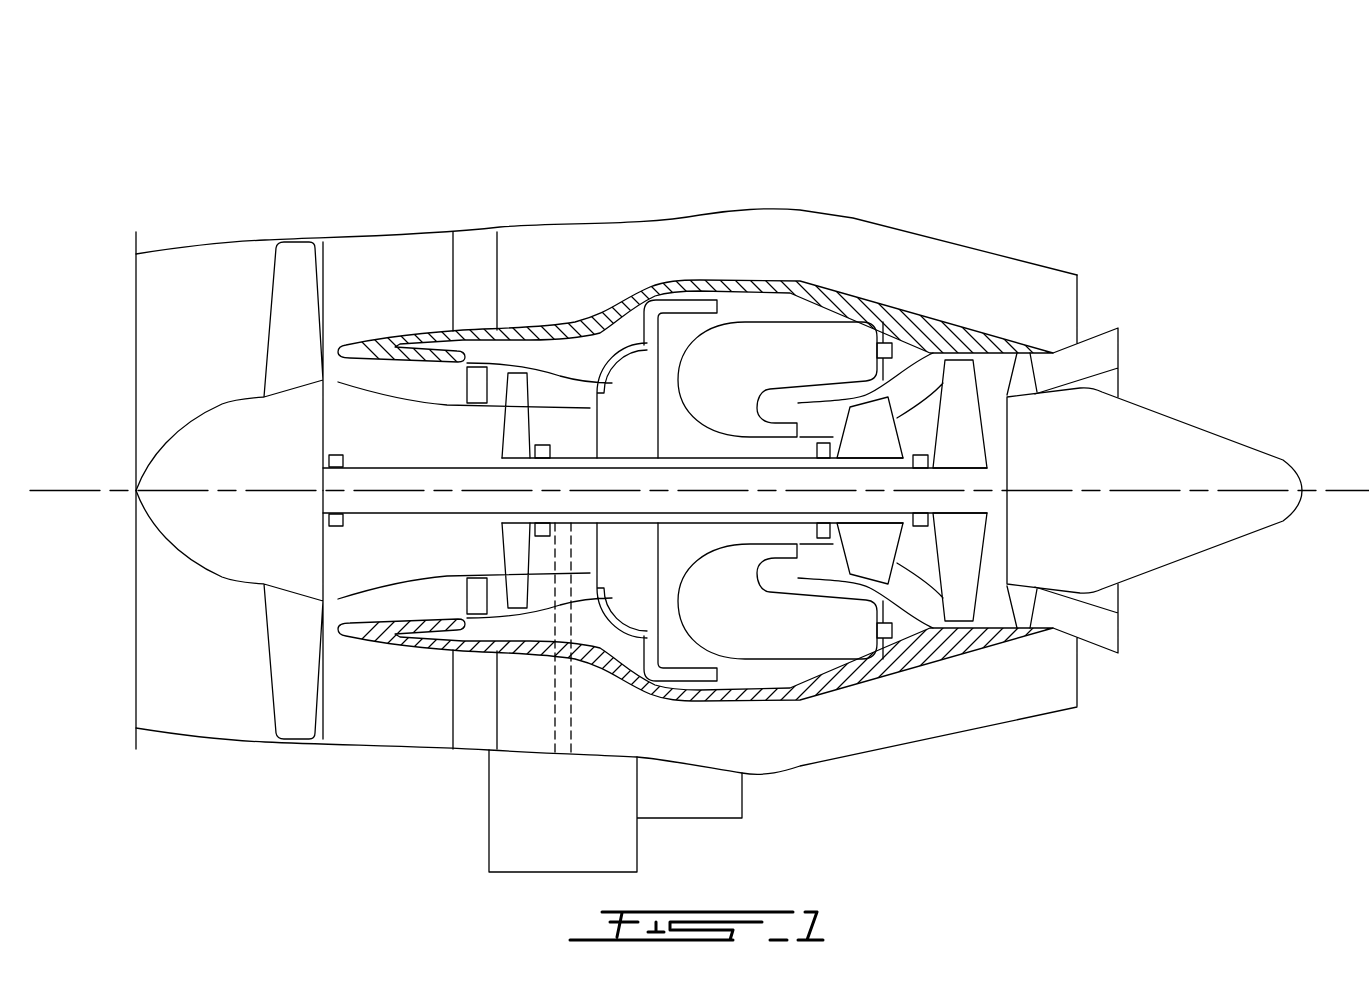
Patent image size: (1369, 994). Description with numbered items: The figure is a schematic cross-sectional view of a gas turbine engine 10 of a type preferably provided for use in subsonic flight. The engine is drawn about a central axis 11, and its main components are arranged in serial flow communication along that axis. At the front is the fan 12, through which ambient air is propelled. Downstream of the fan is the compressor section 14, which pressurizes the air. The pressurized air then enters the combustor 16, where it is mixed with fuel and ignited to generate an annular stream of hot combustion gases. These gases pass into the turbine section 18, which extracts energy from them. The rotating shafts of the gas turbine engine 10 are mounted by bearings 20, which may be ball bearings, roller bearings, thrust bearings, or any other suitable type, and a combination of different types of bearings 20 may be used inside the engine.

The gas turbine engine 10 is at (990, 175).
The central longitudinal axis 11 is at (1340, 490).
The fan 12 is at (290, 650).
The compressor section 14 is at (552, 387).
The combustor 16 is at (780, 343).
The turbine section 18 is at (917, 560).
The bearings 20 is at (543, 535).